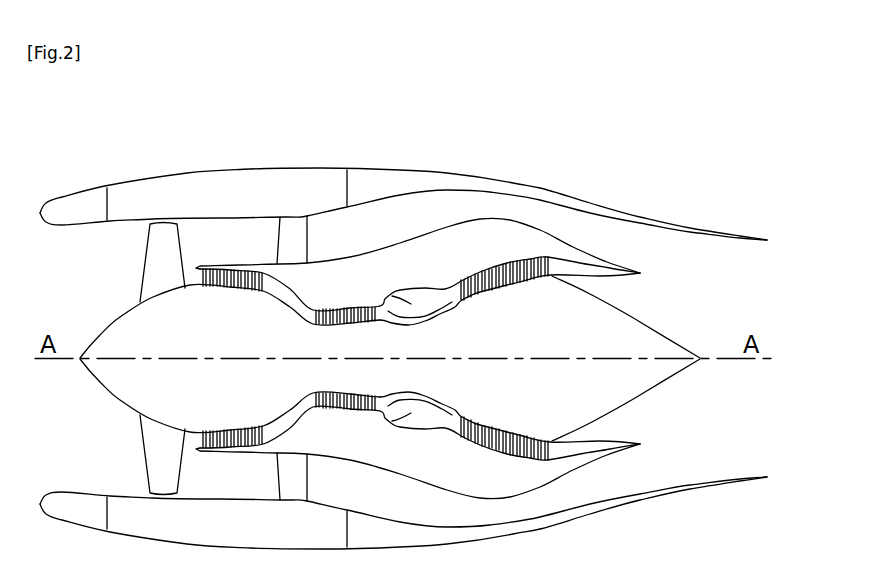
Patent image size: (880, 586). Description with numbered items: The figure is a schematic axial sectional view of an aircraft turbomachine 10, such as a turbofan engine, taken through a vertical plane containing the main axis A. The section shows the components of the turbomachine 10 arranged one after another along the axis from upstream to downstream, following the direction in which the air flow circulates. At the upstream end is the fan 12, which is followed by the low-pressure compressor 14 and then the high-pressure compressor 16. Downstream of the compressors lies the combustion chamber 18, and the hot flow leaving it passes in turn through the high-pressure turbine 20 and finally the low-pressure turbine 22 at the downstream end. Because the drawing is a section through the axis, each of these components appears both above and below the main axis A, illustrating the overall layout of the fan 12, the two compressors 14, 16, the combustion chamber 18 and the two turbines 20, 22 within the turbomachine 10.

The aircraft turbomachine 10 is at (509, 166).
The fan 12 is at (150, 267).
The low-pressure compressor 14 is at (213, 260).
The high-pressure compressor 16 is at (349, 301).
The combustion chamber 18 is at (397, 297).
The high-pressure turbine 20 is at (451, 273).
The low-pressure turbine 22 is at (495, 247).